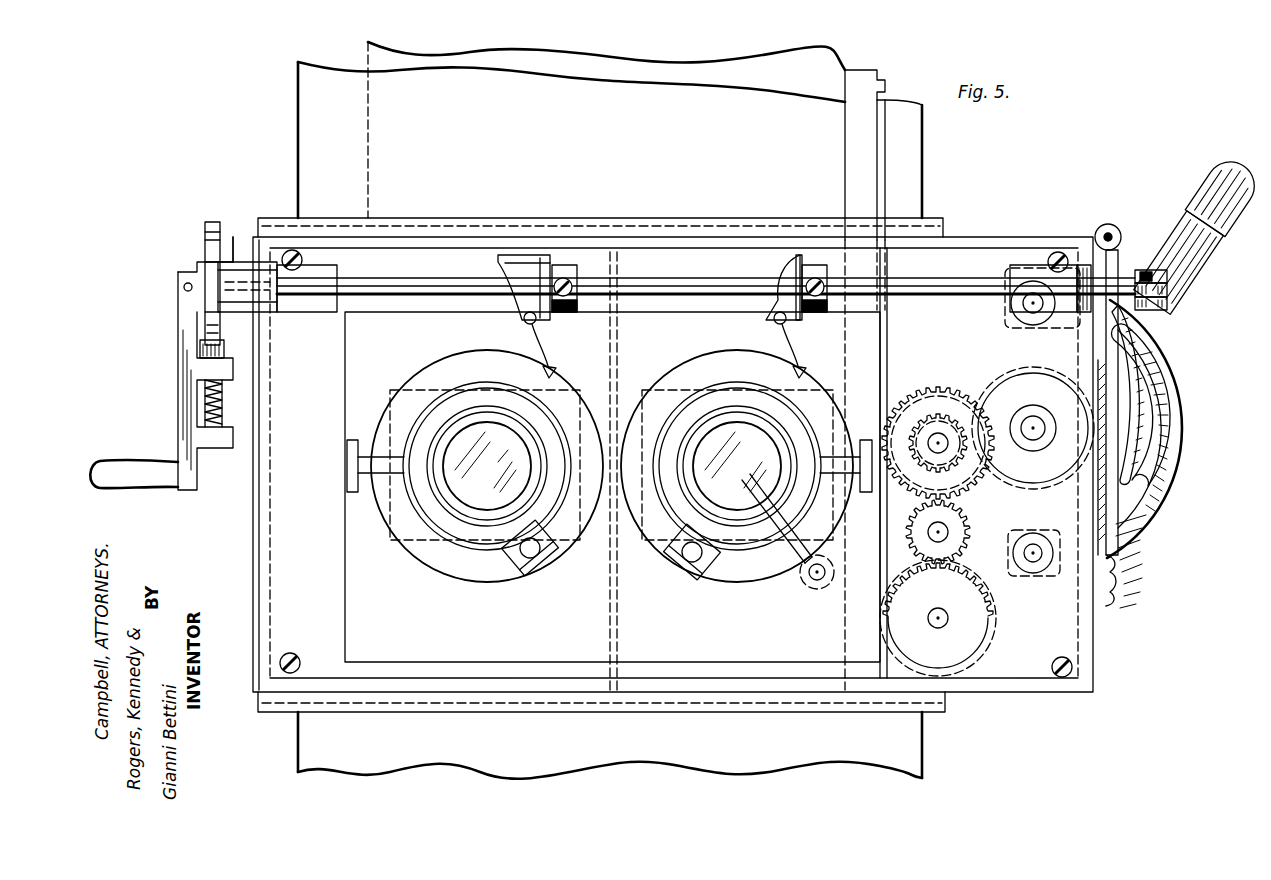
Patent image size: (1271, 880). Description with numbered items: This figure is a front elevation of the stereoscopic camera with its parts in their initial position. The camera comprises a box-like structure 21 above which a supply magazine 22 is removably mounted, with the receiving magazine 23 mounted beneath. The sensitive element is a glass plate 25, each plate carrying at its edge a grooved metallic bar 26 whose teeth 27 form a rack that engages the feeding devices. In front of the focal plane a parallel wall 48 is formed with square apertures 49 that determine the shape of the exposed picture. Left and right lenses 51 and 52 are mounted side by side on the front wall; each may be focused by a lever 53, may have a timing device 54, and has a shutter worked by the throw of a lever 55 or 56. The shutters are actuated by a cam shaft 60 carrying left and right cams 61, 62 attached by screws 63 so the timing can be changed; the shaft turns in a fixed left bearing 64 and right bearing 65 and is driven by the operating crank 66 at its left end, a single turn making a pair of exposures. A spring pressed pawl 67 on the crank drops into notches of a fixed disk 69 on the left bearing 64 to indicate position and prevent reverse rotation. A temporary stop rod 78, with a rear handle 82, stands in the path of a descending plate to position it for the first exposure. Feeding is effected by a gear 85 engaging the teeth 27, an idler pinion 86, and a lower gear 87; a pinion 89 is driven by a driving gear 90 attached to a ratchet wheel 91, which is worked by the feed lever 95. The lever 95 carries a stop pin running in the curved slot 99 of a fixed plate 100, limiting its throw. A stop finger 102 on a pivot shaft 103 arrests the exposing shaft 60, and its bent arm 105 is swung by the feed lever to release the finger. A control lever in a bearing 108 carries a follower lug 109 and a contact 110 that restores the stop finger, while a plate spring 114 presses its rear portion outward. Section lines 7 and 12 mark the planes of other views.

The section line 7- 7 is at (240, 197).
The section line 12- 12 is at (1004, 192).
The box-like structure 21 is at (255, 578).
The supply magazine 22 is at (298, 103).
The receiving magazine 23 is at (298, 742).
The glass plate 25 is at (725, 78).
The grooved metallic bar 26 is at (848, 72).
The teeth 27 is at (885, 90).
The parallel wall 48 is at (608, 598).
The apertures 49 is at (418, 392).
The left lens 51 is at (428, 522).
The right lens 52 is at (757, 558).
The lever 53 is at (528, 560).
The timing device 54 is at (552, 372).
The lever 55 is at (520, 346).
The lever 56 is at (770, 346).
The cam shaft 60 is at (662, 284).
The left cam 61 is at (522, 256).
The right cam 62 is at (785, 255).
The screws 63 is at (577, 278).
The left bearing 64 is at (278, 312).
The right bearing 65 is at (1082, 262).
The operating crank 66 is at (180, 362).
The spring pressed pawl 67 is at (222, 402).
The fixed disk 69 is at (210, 236).
The temporary stop rod 78 is at (818, 582).
The handle 82 is at (796, 576).
The gear 85 is at (950, 390).
The idler pinion 86 is at (970, 526).
The lower gear 87 is at (1000, 619).
The pinion 89 is at (951, 416).
The driving gear 90 is at (1006, 374).
The ratchet wheel 91 is at (1155, 500).
The lever 95 is at (1226, 162).
The curved slot 99 is at (1180, 443).
The fixed plate 100 is at (1184, 420).
The stop finger 102 is at (1124, 238).
The pivot shaft 103 is at (1108, 224).
The bent arm 105 is at (1135, 372).
The bearing 108 is at (1168, 304).
The lug 109 is at (1168, 291).
The contact 110 is at (1168, 278).
The plate spring 114 is at (1108, 580).